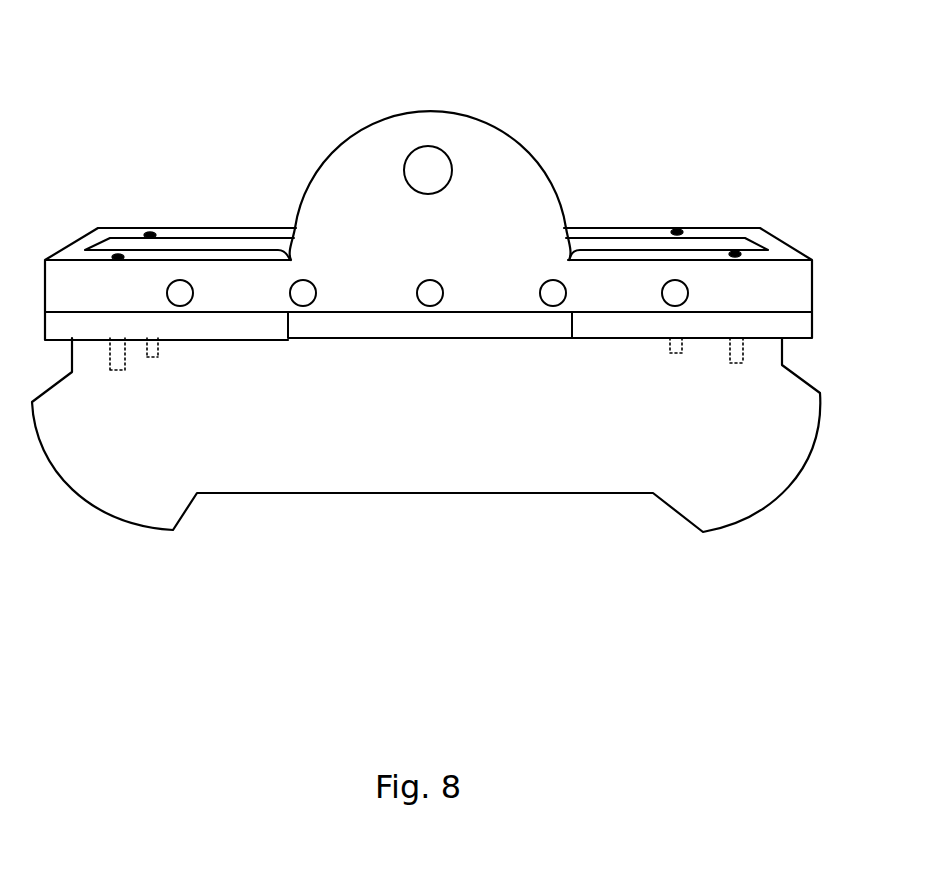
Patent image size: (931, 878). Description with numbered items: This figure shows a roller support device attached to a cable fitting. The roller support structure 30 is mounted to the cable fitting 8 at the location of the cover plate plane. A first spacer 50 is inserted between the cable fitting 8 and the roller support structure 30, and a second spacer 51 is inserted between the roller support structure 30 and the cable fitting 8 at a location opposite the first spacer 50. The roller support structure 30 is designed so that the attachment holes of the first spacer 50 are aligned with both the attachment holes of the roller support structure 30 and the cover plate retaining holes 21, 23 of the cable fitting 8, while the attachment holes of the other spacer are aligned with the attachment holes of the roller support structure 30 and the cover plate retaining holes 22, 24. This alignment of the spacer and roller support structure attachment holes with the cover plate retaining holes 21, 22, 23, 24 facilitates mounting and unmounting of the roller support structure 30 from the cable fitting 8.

The roller support structure 30 is at (493, 177).
The first spacer 50 is at (207, 322).
The second spacer 51 is at (609, 327).
The cable fitting 8 is at (178, 462).
The cover plate retaining hole 21 is at (375, 560).
The cover plate retaining hole 22 is at (375, 560).
The cover plate retaining hole 23 is at (375, 560).
The cover plate retaining hole 24 is at (375, 560).